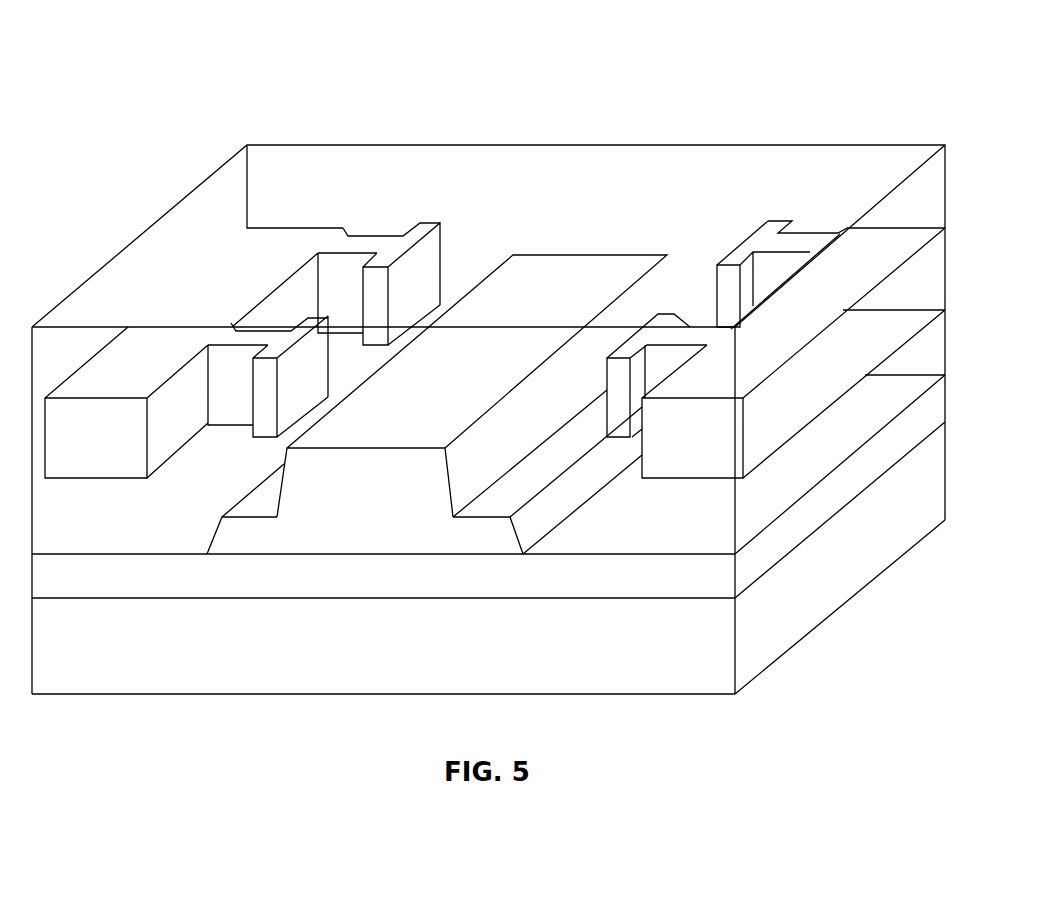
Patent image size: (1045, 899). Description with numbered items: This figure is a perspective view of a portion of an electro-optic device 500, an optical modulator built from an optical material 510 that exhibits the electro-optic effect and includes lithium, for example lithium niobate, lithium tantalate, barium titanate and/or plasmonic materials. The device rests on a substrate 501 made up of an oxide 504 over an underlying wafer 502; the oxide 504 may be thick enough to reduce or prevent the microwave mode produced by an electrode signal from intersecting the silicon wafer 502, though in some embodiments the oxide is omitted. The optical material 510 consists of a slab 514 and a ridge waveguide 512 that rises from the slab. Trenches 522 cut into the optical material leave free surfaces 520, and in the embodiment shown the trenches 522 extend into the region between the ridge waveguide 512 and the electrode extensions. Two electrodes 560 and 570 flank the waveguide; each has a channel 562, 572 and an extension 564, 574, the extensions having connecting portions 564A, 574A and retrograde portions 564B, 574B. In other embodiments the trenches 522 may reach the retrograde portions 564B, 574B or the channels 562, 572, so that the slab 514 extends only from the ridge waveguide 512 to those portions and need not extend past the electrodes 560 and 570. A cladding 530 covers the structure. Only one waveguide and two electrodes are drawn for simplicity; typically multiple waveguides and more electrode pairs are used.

The electro-optic device 500 is at (383, 349).
The substrate 501 is at (801, 652).
The wafer 502 is at (488, 547).
The oxide 504 is at (488, 483).
The optical material 510 is at (472, 392).
The ridge waveguide 512 is at (428, 535).
The slab 514 is at (243, 535).
The free surfaces 520 is at (580, 486).
The trenches 522 is at (810, 455).
The cladding 530 is at (142, 229).
The electrode 560 is at (186, 361).
The channel 562 is at (96, 402).
The extension 564 is at (380, 228).
The connecting portion 564A is at (366, 228).
The retrograde portion 564B is at (436, 242).
The electrode 570 is at (776, 296).
The channel 572 is at (675, 396).
The extension 574 is at (773, 201).
The connecting portion 574A is at (813, 223).
The retrograde portion 574B is at (729, 243).